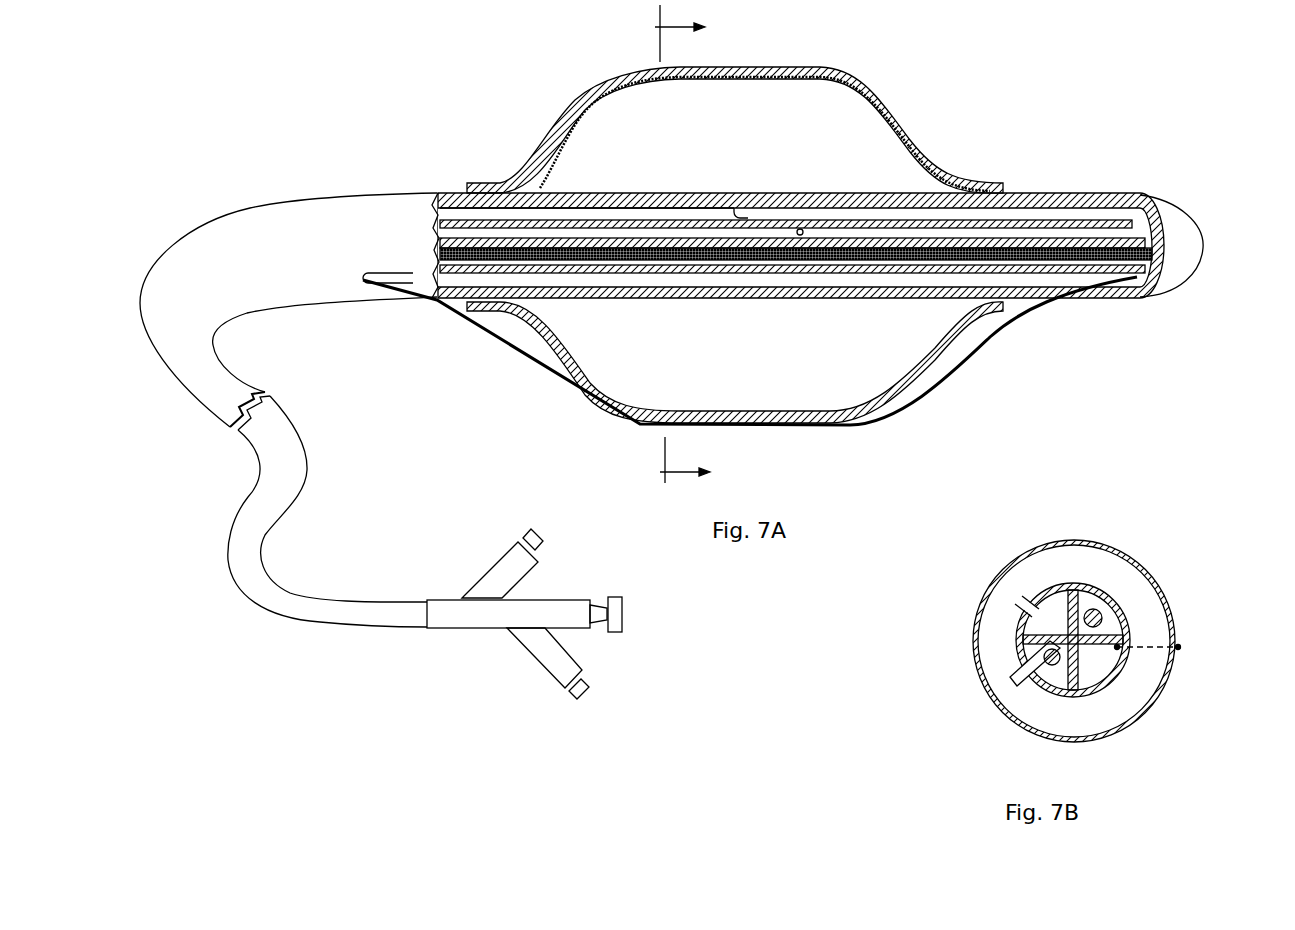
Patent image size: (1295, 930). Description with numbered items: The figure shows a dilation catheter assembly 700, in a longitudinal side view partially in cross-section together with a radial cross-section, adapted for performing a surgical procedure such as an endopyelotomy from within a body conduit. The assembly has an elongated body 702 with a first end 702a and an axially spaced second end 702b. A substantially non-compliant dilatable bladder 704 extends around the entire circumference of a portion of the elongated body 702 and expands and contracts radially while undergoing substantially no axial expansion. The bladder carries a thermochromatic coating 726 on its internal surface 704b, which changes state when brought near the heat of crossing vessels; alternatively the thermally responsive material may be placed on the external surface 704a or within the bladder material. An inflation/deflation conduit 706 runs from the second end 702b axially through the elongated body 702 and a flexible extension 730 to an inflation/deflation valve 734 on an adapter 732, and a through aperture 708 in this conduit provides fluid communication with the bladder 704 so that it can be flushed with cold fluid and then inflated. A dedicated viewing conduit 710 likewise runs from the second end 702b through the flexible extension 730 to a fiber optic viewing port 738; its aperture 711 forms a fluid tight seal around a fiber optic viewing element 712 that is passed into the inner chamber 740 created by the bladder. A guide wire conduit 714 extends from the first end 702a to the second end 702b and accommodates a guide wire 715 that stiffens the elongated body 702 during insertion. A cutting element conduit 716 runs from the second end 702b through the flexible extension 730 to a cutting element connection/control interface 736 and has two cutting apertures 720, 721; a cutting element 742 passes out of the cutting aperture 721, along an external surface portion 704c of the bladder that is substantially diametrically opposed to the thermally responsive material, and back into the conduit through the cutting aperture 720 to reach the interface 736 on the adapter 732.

In FIG. 7A, the dilation catheter assembly 700 is at (1002, 50).
In FIG. 7A, the elongated body 702 is at (1206, 212).
In FIG. 7B, the elongated body 702 is at (1109, 569).
In FIG. 7A, the first end 702a is at (442, 184).
In FIG. 7A, the second end 702b is at (1136, 184).
In FIG. 7A, the dilatable bladder 704 is at (938, 121).
In FIG. 7B, the dilatable bladder 704 is at (958, 643).
In FIG. 7A, the external surface 704a is at (875, 95).
In FIG. 7B, the external surface 704a is at (977, 672).
In FIG. 7A, the internal surface 704b is at (868, 88).
In FIG. 7B, the internal surface 704b is at (1017, 680).
In FIG. 7A, the external surface portion 704c is at (915, 385).
In FIG. 7B, the external surface portion 704c is at (1170, 668).
In FIG. 7A, the inflation/deflation conduit 706 is at (1110, 232).
In FIG. 7B, the inflation/deflation conduit 706 is at (1044, 626).
In FIG. 7A, the through aperture 708 is at (803, 229).
In FIG. 7B, the through aperture 708 is at (1034, 600).
In FIG. 7A, the dedicated viewing conduit 710 is at (1053, 213).
In FIG. 7B, the dedicated viewing conduit 710 is at (1062, 678).
In FIG. 7A, the aperture 711 is at (743, 212).
In FIG. 7B, the aperture 711 is at (1052, 664).
In FIG. 7A, the fiber optic viewing element 712 is at (737, 192).
In FIG. 7B, the fiber optic viewing element 712 is at (1028, 674).
In FIG. 7A, the guide wire conduit 714 is at (1160, 270).
In FIG. 7B, the guide wire conduit 714 is at (1088, 598).
In FIG. 7A, the guide wire 715 is at (1162, 252).
In FIG. 7B, the guide wire 715 is at (1102, 616).
In FIG. 7A, the cutting element conduit 716 is at (680, 280).
In FIG. 7B, the cutting element conduit 716 is at (1094, 668).
In FIG. 7A, the cutting aperture 720 is at (370, 285).
In FIG. 7A, the cutting aperture 721 is at (1060, 305).
In FIG. 7A, the thermochromatic coating 726 is at (734, 96).
In FIG. 7B, the thermochromatic coating 726 is at (985, 634).
In FIG. 7A, the flexible extension 730 is at (201, 421).
In FIG. 7A, the adapter 732 is at (445, 636).
In FIG. 7A, the inflation/deflation valve 734 is at (497, 577).
In FIG. 7A, the cutting element connection/control interface 736 is at (616, 600).
In FIG. 7A, the fiber optic viewing port 738 is at (532, 650).
In FIG. 7A, the inner chamber 740 is at (665, 172).
In FIG. 7B, the inner chamber 740 is at (1098, 574).
In FIG. 7A, the cutting element 742 is at (997, 340).
In FIG. 7B, the cutting element 742 is at (1182, 647).